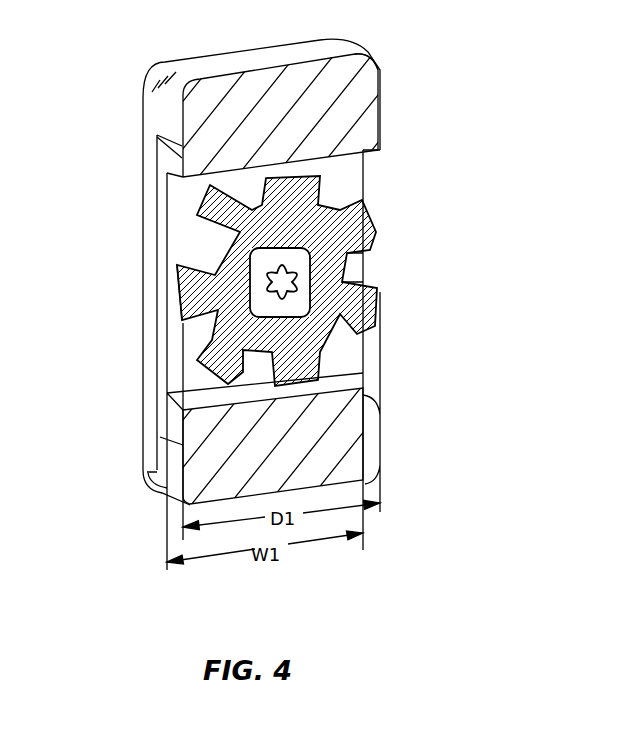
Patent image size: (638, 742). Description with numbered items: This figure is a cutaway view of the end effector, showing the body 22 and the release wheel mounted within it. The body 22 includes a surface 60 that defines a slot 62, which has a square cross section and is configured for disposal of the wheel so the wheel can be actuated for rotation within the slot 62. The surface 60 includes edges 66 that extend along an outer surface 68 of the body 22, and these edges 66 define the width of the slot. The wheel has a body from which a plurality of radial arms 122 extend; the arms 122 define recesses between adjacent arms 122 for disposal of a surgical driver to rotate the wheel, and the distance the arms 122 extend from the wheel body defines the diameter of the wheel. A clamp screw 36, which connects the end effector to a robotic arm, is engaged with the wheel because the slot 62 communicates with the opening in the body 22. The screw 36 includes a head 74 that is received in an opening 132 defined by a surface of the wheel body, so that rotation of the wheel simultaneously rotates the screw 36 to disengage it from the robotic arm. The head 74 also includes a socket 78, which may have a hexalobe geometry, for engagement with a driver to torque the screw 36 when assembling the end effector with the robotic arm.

The body 22 is at (377, 70).
The arms 122 is at (367, 140).
The surface 60 is at (355, 175).
The slot 62 is at (367, 197).
The edges 66 is at (165, 222).
The clamp screw 36 is at (305, 283).
The head 74 is at (345, 315).
The socket 78 is at (283, 281).
The opening 132 is at (188, 308).
The outer surface 68 is at (150, 395).